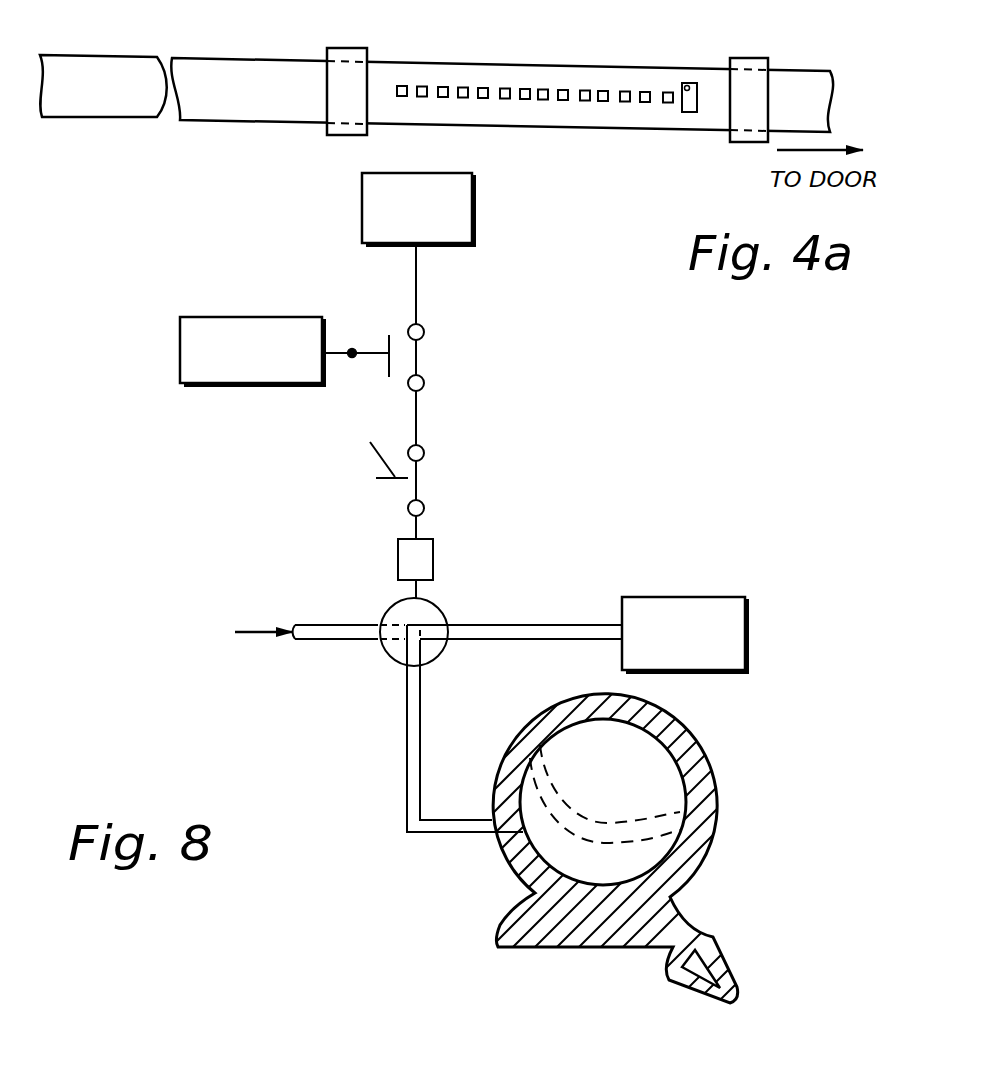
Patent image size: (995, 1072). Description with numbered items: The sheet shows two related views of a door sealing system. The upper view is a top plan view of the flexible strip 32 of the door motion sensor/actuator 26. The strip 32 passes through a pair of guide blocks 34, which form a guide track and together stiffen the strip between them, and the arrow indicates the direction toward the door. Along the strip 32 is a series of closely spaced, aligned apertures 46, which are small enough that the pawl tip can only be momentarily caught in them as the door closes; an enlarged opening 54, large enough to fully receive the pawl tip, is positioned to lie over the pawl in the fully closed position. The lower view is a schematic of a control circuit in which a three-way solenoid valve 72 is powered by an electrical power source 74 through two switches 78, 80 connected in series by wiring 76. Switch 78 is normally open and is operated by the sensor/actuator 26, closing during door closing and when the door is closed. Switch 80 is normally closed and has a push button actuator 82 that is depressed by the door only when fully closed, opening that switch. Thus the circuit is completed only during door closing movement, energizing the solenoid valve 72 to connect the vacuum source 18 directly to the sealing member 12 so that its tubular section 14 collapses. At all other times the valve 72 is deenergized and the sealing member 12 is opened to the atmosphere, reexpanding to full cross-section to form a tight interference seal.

In FIG. 4A, the flexible strip 32 is at (93, 75).
In FIG. 4A, the guide block 34 is at (347, 55).
In FIG. 4A, the apertures 46 is at (483, 88).
In FIG. 4A, the enlarged opening 54 is at (688, 87).
In FIG. 8, the power source 74 is at (472, 205).
In FIG. 8, the wires 76 is at (416, 282).
In FIG. 8, the sensor/actuator 26 is at (245, 317).
In FIG. 8, the switch 78 is at (414, 353).
In FIG. 8, the switch 80 is at (435, 457).
In FIG. 8, the push button actuator 82 is at (368, 449).
In FIG. 8, the three-way solenoid valve 72 is at (435, 596).
In FIG. 8, the vacuum source 18 is at (692, 597).
In FIG. 8, the sealing member 12 is at (695, 731).
In FIG. 8, the tubular section 14 is at (713, 832).